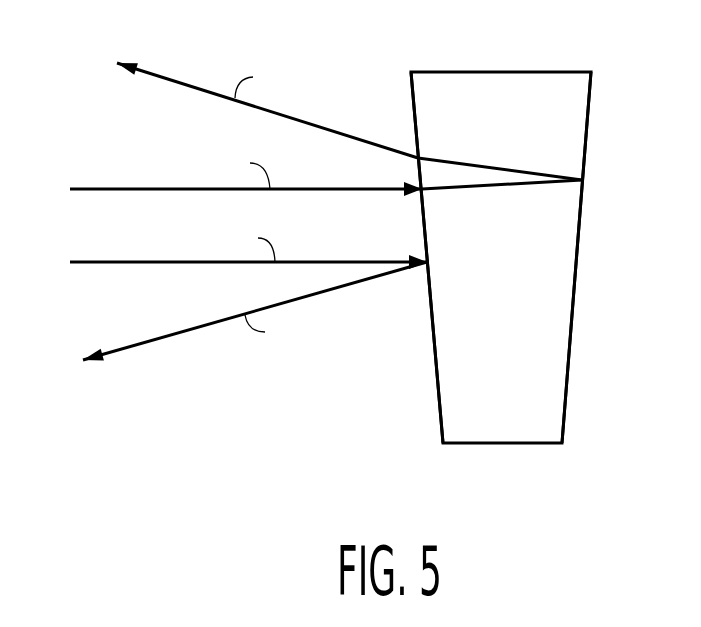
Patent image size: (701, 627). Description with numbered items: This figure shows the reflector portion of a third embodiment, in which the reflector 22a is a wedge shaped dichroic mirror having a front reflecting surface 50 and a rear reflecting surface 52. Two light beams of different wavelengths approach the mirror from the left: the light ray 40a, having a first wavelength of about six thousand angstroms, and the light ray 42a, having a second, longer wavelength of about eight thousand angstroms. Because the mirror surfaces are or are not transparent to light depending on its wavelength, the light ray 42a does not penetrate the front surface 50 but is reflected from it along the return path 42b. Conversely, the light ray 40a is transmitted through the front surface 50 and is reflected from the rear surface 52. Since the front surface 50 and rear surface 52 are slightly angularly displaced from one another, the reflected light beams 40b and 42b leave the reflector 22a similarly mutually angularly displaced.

The reflector 22a is at (504, 72).
The light ray 40a is at (100, 189).
The reflected light beam 40b is at (183, 85).
The light ray 42a is at (92, 262).
The return path 42b is at (148, 342).
The front reflecting surface 50 is at (439, 410).
The rear reflecting surface 52 is at (563, 407).